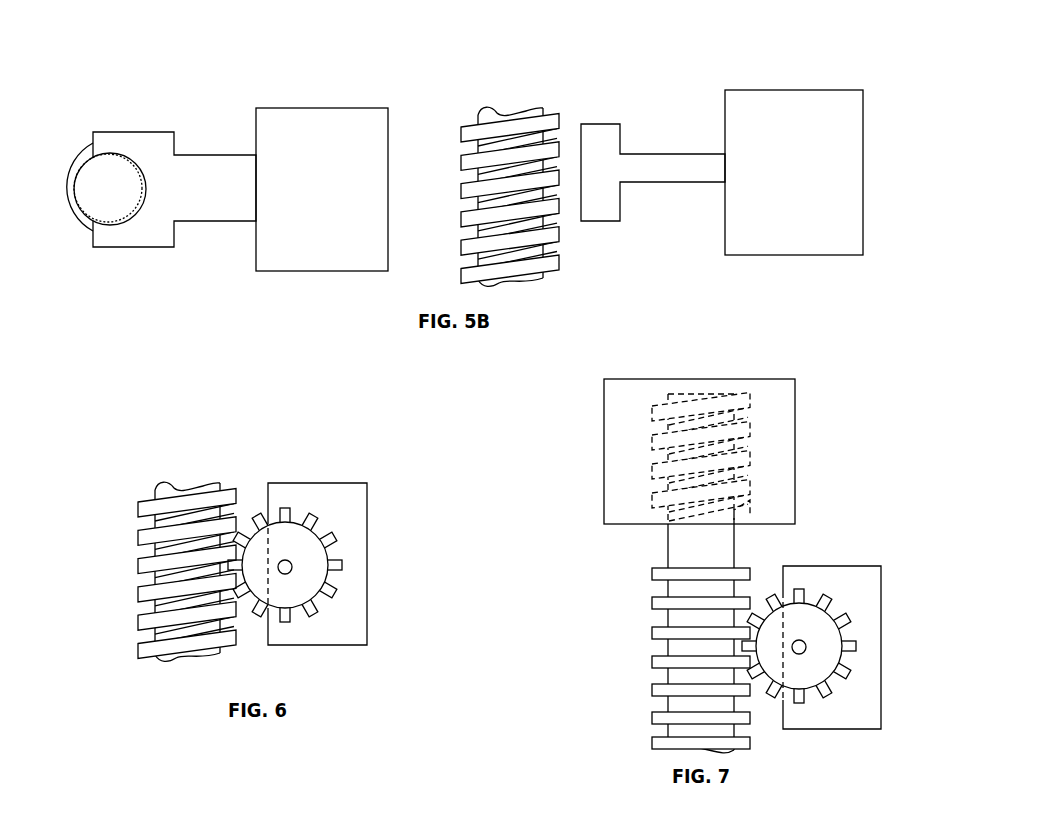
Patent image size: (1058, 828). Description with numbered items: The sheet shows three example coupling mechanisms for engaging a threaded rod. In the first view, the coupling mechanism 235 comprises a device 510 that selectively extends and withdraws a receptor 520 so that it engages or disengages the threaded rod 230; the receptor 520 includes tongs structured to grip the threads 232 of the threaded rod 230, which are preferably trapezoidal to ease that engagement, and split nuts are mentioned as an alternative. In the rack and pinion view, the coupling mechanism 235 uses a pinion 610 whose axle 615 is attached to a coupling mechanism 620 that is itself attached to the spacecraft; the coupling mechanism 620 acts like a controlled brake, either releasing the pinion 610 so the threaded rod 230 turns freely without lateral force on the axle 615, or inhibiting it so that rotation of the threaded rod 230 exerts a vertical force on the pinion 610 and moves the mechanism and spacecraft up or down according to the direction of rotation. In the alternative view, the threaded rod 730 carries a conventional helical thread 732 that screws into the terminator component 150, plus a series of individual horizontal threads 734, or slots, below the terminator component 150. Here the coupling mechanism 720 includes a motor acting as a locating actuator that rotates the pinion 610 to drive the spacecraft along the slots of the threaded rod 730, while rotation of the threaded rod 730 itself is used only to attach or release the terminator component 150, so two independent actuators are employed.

In FIG. 5B, the coupling mechanism 235 is at (290, 77).
In FIG. 6, the coupling mechanism 235 is at (352, 452).
In FIG. 5B, the device 510 is at (323, 108).
In FIG. 5B, the receptor 520 is at (124, 132).
In FIG. 5B, the threaded rod 230 is at (99, 196).
In FIG. 6, the threaded rod 230 is at (187, 492).
In FIG. 5B, the threads 232 is at (480, 245).
In FIG. 6, the threads 232 is at (155, 622).
In FIG. 6, the coupling mechanism 620 is at (348, 502).
In FIG. 6, the pinion 610 is at (317, 558).
In FIG. 7, the pinion 610 is at (826, 643).
In FIG. 6, the axle 615 is at (285, 574).
In FIG. 7, the terminator component 150 is at (795, 451).
In FIG. 7, the threaded rod 730 is at (736, 550).
In FIG. 7, the helical thread 732 is at (667, 495).
In FIG. 7, the horizontal threads 734 is at (652, 603).
In FIG. 7, the coupling mechanism 720 is at (833, 566).